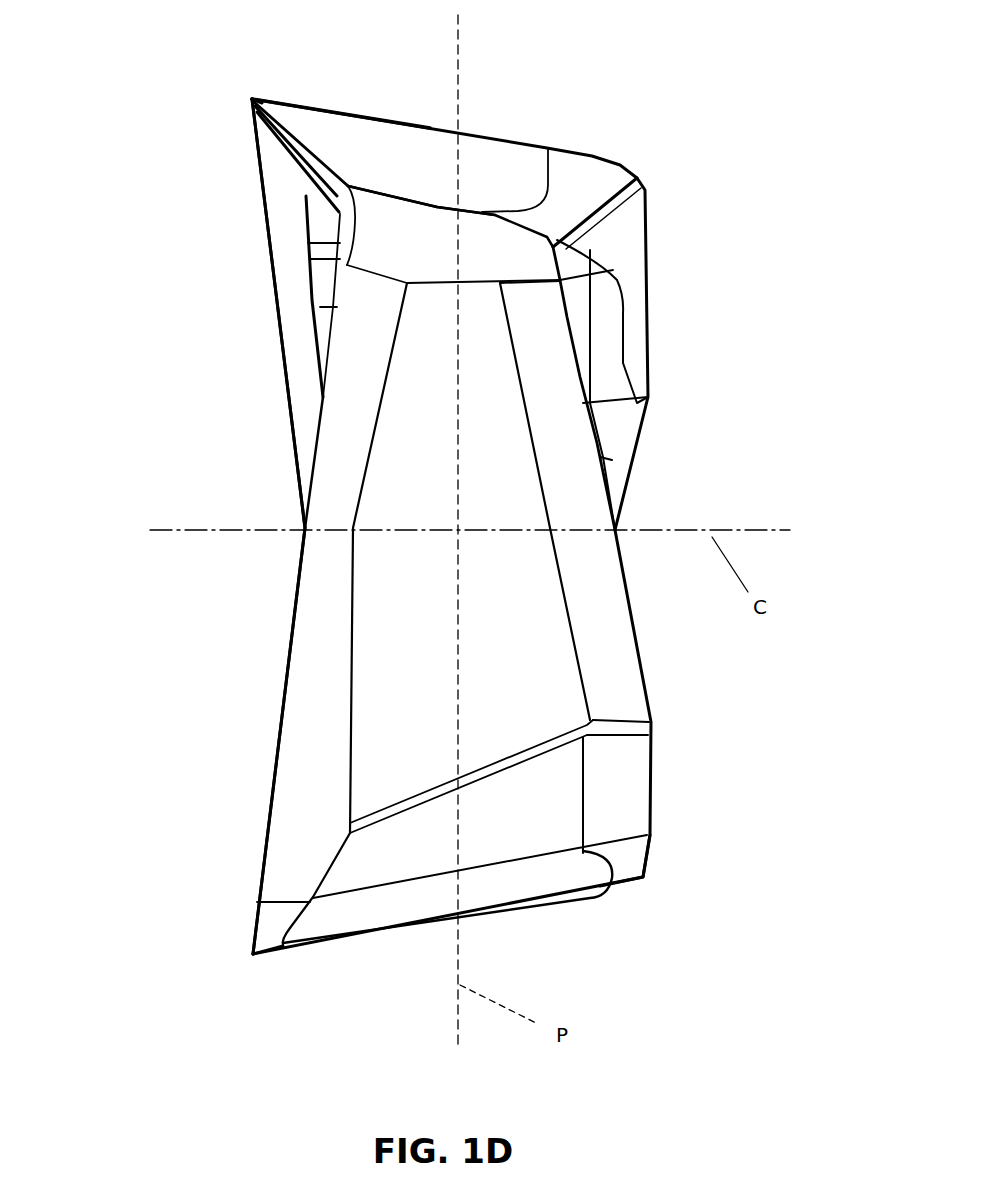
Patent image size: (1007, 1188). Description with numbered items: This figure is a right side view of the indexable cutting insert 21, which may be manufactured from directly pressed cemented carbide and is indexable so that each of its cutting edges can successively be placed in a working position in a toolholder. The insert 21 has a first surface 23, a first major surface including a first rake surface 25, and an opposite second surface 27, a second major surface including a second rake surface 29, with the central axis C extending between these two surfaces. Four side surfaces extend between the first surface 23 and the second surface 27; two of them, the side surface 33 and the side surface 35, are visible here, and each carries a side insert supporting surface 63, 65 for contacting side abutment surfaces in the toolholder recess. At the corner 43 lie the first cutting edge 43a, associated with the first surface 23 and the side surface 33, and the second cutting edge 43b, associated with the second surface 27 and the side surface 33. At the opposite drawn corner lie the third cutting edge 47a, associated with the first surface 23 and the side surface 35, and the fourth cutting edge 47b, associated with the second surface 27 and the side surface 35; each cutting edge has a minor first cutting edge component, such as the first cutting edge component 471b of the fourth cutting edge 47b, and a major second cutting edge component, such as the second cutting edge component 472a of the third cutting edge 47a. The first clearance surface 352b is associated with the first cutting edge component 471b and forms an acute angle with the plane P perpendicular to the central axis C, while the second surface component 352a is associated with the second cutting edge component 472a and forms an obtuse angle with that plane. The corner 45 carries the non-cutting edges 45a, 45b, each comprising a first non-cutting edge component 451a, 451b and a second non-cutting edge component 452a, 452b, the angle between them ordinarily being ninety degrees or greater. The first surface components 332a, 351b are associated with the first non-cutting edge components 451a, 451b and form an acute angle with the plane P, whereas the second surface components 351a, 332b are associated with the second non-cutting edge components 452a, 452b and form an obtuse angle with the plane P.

The cutting insert 21 is at (779, 119).
The first surface 23 is at (299, 448).
The first rake surface 25 is at (288, 253).
The second surface 27 is at (599, 432).
The second rake surface 29 is at (628, 238).
The side surface 33 is at (383, 131).
The side surface 35 is at (407, 677).
The corner 43 is at (326, 108).
The first cutting edge 43a is at (246, 98).
The second cutting edge 43b is at (650, 180).
The corner 45 is at (437, 205).
The non-cutting edge 45a is at (343, 216).
The non-cutting edge 45b is at (558, 249).
The third cutting edge 47a is at (248, 960).
The fourth cutting edge 47b is at (646, 879).
The side insert supporting surface 63 is at (408, 141).
The side insert supporting surface 65 is at (388, 586).
The first surface component 332a is at (346, 162).
The second surface component 332b is at (552, 217).
The second surface component 351a is at (361, 322).
The first surface component 351b is at (540, 323).
The second surface component 352a is at (290, 845).
The first clearance surface 352b is at (628, 781).
The first non-cutting edge component 451a is at (345, 179).
The first non-cutting edge component 451b is at (570, 305).
The second non-cutting edge component 452a is at (322, 262).
The second non-cutting edge component 452b is at (559, 246).
The first cutting edge component 471b is at (648, 823).
The second cutting edge component 472a is at (262, 893).